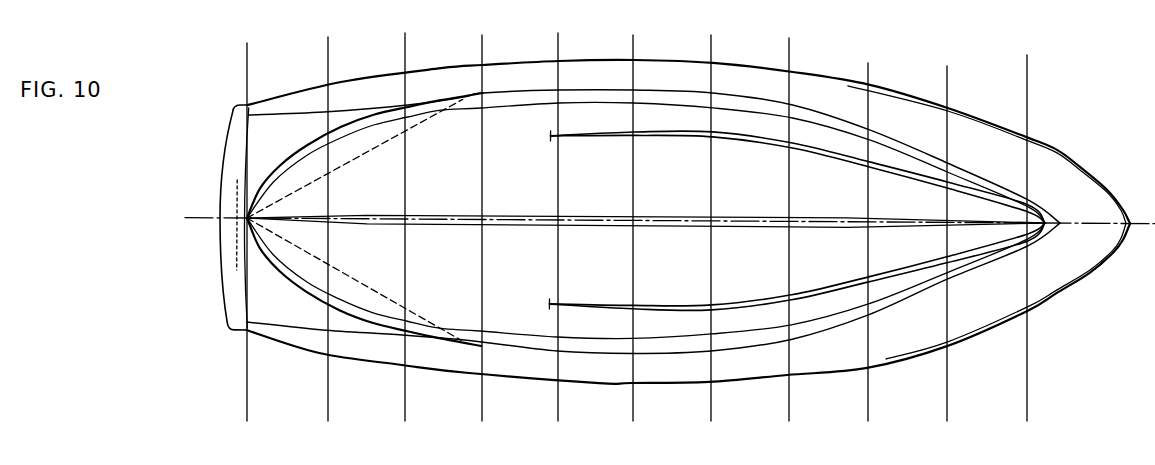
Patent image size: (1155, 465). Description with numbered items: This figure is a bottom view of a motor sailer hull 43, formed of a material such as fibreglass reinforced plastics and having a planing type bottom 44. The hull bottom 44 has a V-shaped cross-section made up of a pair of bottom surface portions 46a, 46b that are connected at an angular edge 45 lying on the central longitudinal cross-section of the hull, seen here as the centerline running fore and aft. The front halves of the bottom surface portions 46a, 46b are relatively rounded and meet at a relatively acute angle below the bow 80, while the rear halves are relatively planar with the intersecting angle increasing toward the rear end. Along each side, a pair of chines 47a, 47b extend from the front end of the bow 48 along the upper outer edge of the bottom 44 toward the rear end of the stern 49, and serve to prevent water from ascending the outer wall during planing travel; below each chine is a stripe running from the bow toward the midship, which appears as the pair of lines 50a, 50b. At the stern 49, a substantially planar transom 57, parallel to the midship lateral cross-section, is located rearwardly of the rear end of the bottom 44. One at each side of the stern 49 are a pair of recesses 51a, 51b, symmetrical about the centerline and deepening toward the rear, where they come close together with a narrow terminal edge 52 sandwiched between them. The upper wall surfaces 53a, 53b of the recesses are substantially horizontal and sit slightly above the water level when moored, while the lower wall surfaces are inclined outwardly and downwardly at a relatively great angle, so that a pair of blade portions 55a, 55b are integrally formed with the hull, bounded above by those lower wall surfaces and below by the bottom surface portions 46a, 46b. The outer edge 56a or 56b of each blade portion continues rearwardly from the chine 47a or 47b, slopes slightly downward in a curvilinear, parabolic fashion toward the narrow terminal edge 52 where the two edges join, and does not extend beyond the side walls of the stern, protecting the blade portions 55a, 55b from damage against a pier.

The hull 43 is at (976, 104).
The hull bottom 44 is at (600, 386).
The angular edge 45 is at (612, 221).
The bottom surface portion 46a is at (500, 127).
The bottom surface portion 46b is at (527, 298).
The chine 47a is at (817, 118).
The chine 47b is at (747, 340).
The bow 48 is at (1063, 183).
The stern 49 is at (347, 103).
The planing strake 50a is at (875, 162).
The planing strake 50b is at (877, 288).
The recess 51a is at (387, 127).
The recess 51b is at (381, 305).
The narrow terminal edge 52 is at (248, 198).
The upper wall surface 53a is at (290, 120).
The upper wall surface 53b is at (313, 330).
The blade portion 55a is at (293, 175).
The blade portion 55b is at (302, 267).
The outer edge 56a is at (317, 136).
The outer edge 56b is at (360, 313).
The transom 57 is at (220, 258).
The bow 80 is at (1105, 228).